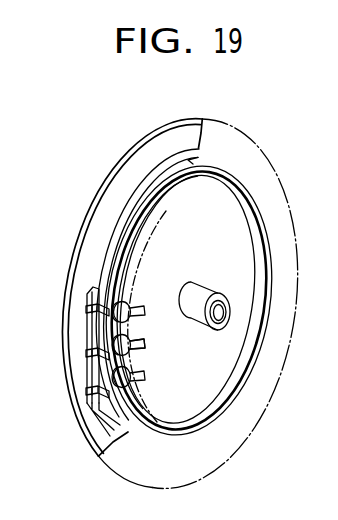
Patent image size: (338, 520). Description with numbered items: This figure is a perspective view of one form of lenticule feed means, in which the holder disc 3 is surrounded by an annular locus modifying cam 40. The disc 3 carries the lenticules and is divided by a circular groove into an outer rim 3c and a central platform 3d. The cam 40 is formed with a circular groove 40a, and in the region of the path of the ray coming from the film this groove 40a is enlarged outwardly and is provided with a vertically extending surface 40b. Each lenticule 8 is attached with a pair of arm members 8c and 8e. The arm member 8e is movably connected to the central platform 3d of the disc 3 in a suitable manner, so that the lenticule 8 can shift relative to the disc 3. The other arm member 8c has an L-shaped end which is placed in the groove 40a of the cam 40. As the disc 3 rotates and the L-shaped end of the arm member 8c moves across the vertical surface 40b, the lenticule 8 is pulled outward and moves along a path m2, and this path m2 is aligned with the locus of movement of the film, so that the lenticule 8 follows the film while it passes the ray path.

The holder disc 3 is at (256, 198).
The outer rim 3c is at (169, 435).
The central platform 3d is at (217, 380).
The path of movement m2 is at (133, 403).
The annular locus modifying cam 40 is at (97, 205).
The circular groove 40a is at (140, 188).
The vertically extending surface 40b is at (88, 379).
The lenticule 8 is at (129, 304).
The arm member 8c is at (87, 357).
The arm member 8e is at (134, 361).